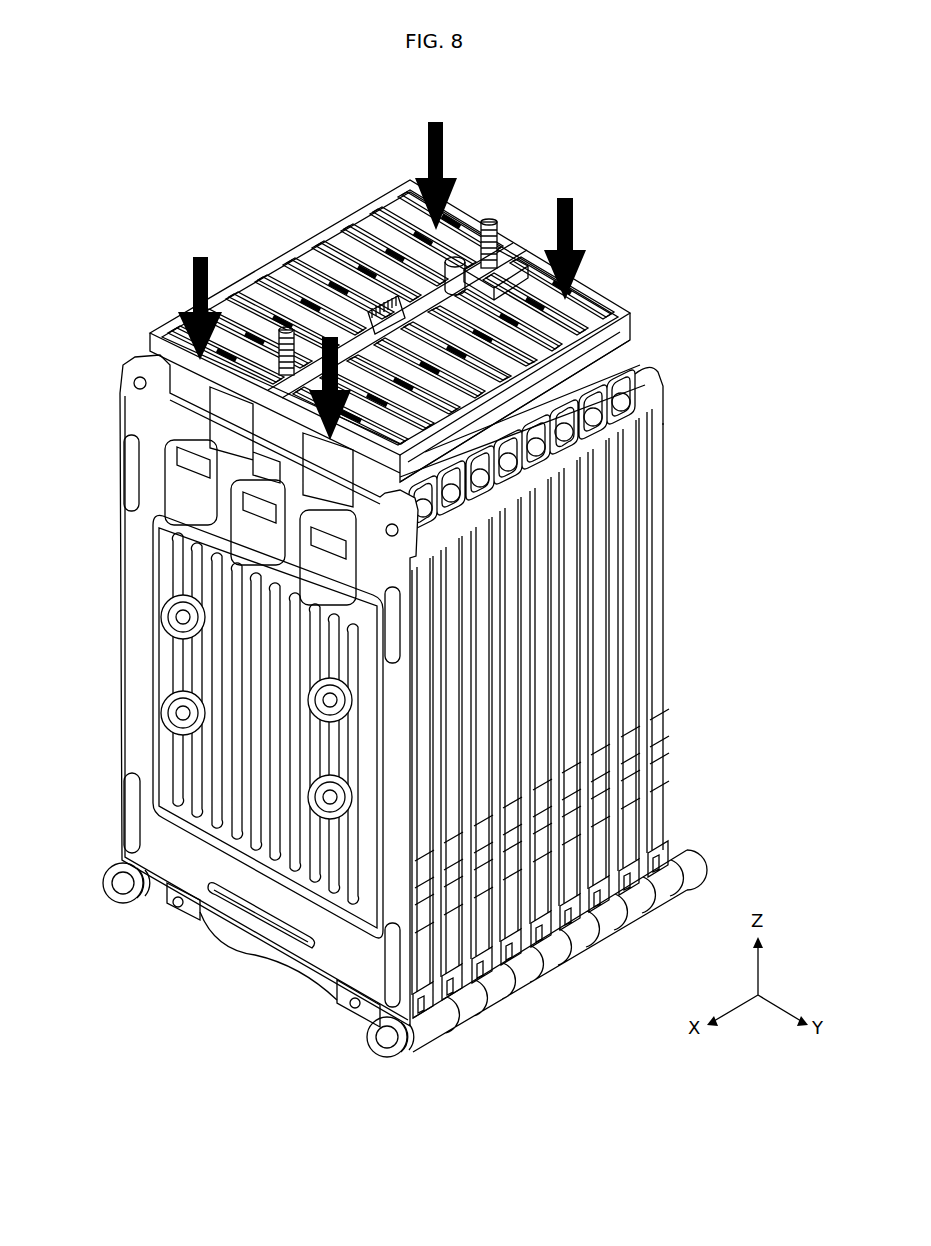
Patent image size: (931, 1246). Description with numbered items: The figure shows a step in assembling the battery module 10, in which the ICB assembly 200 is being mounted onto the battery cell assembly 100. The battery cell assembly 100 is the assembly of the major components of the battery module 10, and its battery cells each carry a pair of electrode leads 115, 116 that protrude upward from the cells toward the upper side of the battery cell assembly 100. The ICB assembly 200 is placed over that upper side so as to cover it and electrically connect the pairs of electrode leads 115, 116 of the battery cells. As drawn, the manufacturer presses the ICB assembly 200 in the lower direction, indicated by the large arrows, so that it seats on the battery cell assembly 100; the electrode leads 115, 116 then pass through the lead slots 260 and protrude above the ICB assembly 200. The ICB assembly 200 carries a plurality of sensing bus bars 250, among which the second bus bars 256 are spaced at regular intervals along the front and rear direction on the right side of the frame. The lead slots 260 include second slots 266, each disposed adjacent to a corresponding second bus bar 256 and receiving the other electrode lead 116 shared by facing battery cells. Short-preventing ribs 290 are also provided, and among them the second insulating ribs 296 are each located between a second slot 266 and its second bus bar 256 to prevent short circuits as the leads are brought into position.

The battery module 10 is at (144, 181).
The battery cell assembly 100 is at (682, 601).
The electrode lead 115 is at (238, 427).
The electrode lead 116 is at (500, 493).
The ICB assembly 200 is at (512, 197).
The sensing bus bar 250 is at (290, 268).
The second bus bar 256 is at (470, 388).
The lead slot 260 is at (306, 272).
The second slot 266 is at (455, 395).
The short-preventing rib 290 is at (285, 272).
The second insulating rib 296 is at (450, 420).